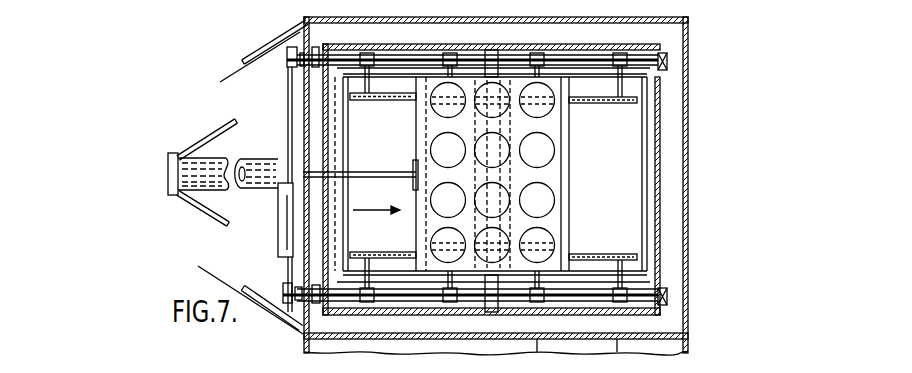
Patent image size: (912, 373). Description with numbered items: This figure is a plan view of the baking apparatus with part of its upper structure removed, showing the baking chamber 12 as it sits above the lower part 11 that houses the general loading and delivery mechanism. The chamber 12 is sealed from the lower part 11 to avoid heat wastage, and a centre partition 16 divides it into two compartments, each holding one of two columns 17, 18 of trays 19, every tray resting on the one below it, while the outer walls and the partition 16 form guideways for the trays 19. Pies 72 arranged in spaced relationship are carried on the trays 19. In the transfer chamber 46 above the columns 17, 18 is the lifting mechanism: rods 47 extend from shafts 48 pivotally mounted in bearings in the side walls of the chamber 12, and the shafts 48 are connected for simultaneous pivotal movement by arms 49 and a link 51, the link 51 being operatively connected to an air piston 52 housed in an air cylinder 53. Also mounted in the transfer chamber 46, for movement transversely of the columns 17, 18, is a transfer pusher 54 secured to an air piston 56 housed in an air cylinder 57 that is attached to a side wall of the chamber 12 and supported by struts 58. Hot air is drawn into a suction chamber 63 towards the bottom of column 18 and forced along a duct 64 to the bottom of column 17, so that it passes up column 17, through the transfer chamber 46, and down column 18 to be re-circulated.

The lower part 11 is at (672, 352).
The baking chamber 12 is at (687, 179).
The centre partition 16 is at (492, 306).
The column 17 is at (405, 64).
The column 18 is at (573, 69).
The trays 19 is at (343, 125).
The transfer chamber 46 is at (660, 113).
The rods 47 is at (360, 100).
The shafts 48 is at (602, 61).
The arms 49 is at (300, 50).
The link 51 is at (288, 141).
The air piston 52 is at (288, 268).
The air cylinder 53 is at (285, 236).
The transfer pusher 54 is at (413, 170).
The air piston 56 is at (378, 178).
The air cylinder 57 is at (208, 180).
The struts 58 is at (231, 121).
The suction chamber 63 is at (496, 11).
The duct 64 is at (275, 32).
The pies 72 is at (443, 250).